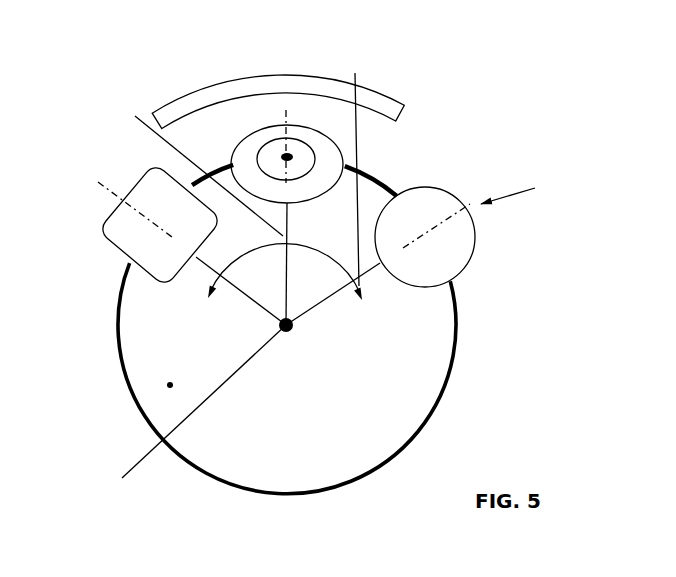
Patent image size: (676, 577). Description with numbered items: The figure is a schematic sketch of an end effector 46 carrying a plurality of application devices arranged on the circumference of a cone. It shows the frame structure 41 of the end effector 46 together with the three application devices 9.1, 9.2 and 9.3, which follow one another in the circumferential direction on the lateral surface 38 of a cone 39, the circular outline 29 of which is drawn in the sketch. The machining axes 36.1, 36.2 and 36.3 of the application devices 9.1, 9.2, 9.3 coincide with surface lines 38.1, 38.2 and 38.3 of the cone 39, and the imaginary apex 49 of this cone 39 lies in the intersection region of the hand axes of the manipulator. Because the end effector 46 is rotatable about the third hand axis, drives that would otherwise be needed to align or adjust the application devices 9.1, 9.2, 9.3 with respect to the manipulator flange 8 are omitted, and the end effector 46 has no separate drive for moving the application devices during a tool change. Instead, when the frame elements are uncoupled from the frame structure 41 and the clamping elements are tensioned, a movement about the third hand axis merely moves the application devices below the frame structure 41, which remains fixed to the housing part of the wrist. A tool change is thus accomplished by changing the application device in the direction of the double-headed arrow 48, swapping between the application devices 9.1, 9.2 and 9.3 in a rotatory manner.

The manipulator flange 8 is at (446, 396).
The circumferential edge of carrier disc 29 is at (457, 356).
The lateral surface 38 is at (118, 370).
The application device 9.1 is at (157, 188).
The machining axis 36.1 is at (118, 191).
The application device 9.2 is at (273, 150).
The machining axis 36.2 is at (282, 108).
The application device 9.3 is at (425, 208).
The machining axis 36.3 is at (473, 203).
The end effector 46 is at (519, 193).
The frame structure 41 is at (380, 107).
The surface line 38.2 is at (198, 166).
The surface line 38.3 is at (362, 170).
The surface line 38.1 is at (237, 293).
The double-headed arrow 48 is at (221, 271).
The cone 39 is at (170, 385).
The imaginary apex 49 is at (191, 414).